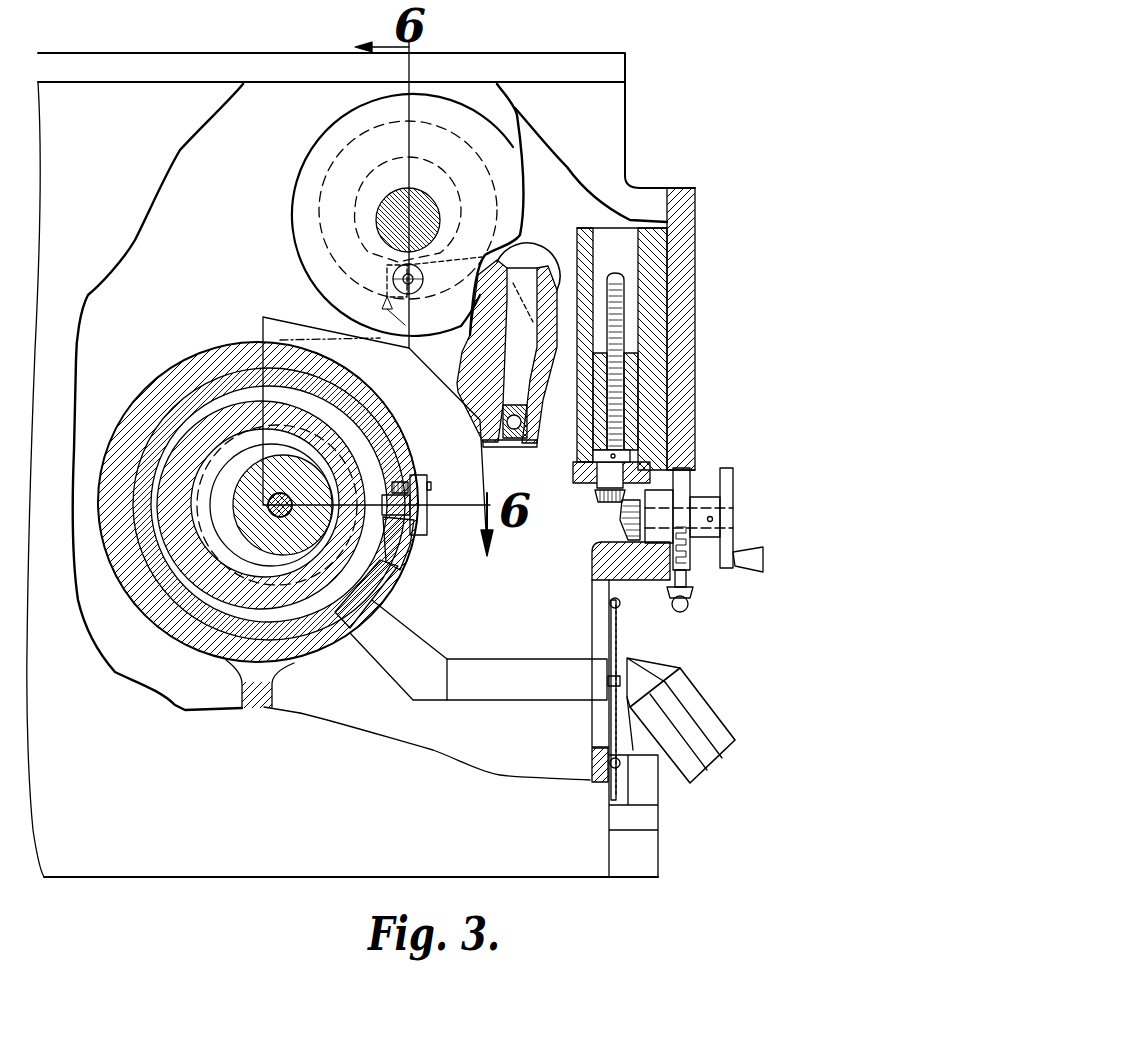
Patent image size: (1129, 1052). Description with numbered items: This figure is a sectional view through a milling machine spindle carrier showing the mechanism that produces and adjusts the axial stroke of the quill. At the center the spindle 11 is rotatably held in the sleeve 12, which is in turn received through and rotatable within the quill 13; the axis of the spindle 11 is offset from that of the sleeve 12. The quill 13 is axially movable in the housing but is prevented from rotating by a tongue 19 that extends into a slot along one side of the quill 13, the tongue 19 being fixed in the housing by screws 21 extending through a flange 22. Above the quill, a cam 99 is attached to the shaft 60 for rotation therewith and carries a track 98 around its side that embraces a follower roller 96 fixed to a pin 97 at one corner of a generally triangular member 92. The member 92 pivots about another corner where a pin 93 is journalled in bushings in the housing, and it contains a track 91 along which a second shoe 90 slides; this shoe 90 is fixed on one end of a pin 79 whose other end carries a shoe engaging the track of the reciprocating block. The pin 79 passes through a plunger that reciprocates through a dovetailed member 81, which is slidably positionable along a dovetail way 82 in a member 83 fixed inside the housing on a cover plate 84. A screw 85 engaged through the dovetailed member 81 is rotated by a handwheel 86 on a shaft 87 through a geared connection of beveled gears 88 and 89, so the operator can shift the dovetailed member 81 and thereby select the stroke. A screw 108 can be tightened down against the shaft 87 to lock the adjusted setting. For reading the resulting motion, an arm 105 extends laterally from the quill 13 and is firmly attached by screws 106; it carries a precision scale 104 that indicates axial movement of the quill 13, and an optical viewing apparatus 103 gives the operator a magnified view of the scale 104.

The spindle 11 is at (258, 478).
The sleeve 12 is at (233, 578).
The quill 13 is at (375, 430).
The tongue 19 is at (410, 546).
The screws 21 is at (430, 486).
The flange 22 is at (428, 532).
The shaft 60 is at (423, 188).
The pin 79 is at (483, 427).
The dovetailed member 81 is at (578, 450).
The dovetail way 82 is at (595, 240).
The member 83 is at (685, 262).
The cover plate 84 is at (693, 370).
The screw 85 is at (614, 276).
The handwheel 86 is at (733, 471).
The shaft 87 is at (706, 492).
The beveled gear 88 is at (620, 528).
The beveled gear 89 is at (604, 499).
The second shoe 90 is at (513, 432).
The track 91 is at (528, 420).
The member 92 is at (507, 272).
The pin 93 is at (545, 335).
The follower roller 96 is at (387, 302).
The pin 97 is at (390, 277).
The track 98 is at (320, 208).
The cam 99 is at (300, 148).
The optical viewing apparatus 103 is at (705, 700).
The precision scale 104 is at (607, 682).
The arm 105 is at (540, 649).
The screws 106 is at (395, 604).
The screw 108 is at (692, 588).